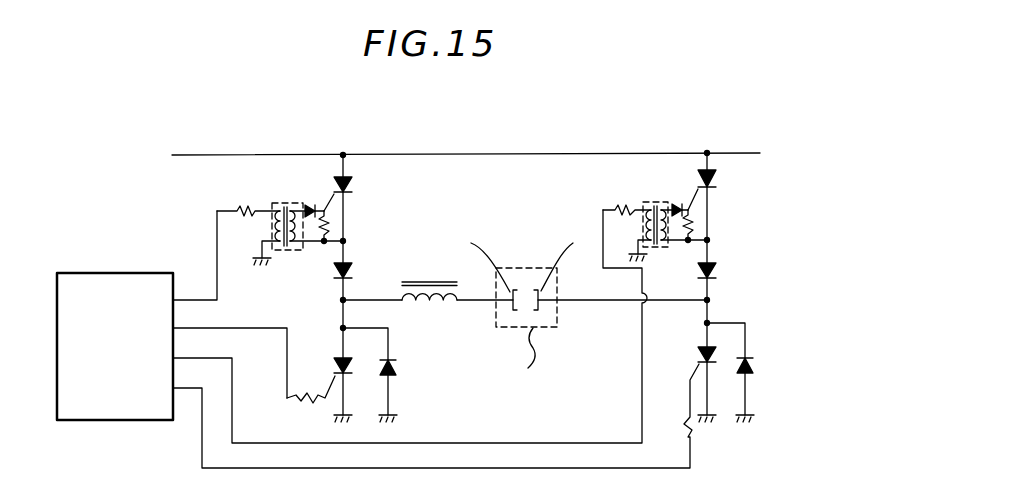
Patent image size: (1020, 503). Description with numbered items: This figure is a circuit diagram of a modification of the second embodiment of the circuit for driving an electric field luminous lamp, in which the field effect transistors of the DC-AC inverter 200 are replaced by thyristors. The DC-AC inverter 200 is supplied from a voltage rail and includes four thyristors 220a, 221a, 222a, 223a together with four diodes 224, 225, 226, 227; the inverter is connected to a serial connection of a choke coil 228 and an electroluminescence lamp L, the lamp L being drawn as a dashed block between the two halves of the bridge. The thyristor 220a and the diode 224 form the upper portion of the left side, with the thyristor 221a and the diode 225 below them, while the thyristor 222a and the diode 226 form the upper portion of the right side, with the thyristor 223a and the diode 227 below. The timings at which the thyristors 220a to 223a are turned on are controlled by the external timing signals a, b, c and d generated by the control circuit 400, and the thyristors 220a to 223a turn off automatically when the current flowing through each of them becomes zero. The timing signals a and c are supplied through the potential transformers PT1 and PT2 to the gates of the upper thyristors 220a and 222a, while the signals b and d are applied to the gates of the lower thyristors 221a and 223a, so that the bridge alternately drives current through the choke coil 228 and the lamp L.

The DC-AC inverter 200 is at (527, 165).
The thyristor 220a is at (368, 192).
The thyristor 221a is at (319, 368).
The thyristor 222a is at (731, 190).
The thyristor 223a is at (444, 407).
The diode 224 is at (367, 274).
The diode 225 is at (392, 375).
The diode 226 is at (730, 274).
The diode 227 is at (753, 372).
The choke coil 228 is at (437, 305).
The control circuit 400 is at (122, 422).
The potential transformer PT1 is at (280, 220).
The potential transformer PT2 is at (655, 218).
The electroluminescence lamp L is at (581, 309).